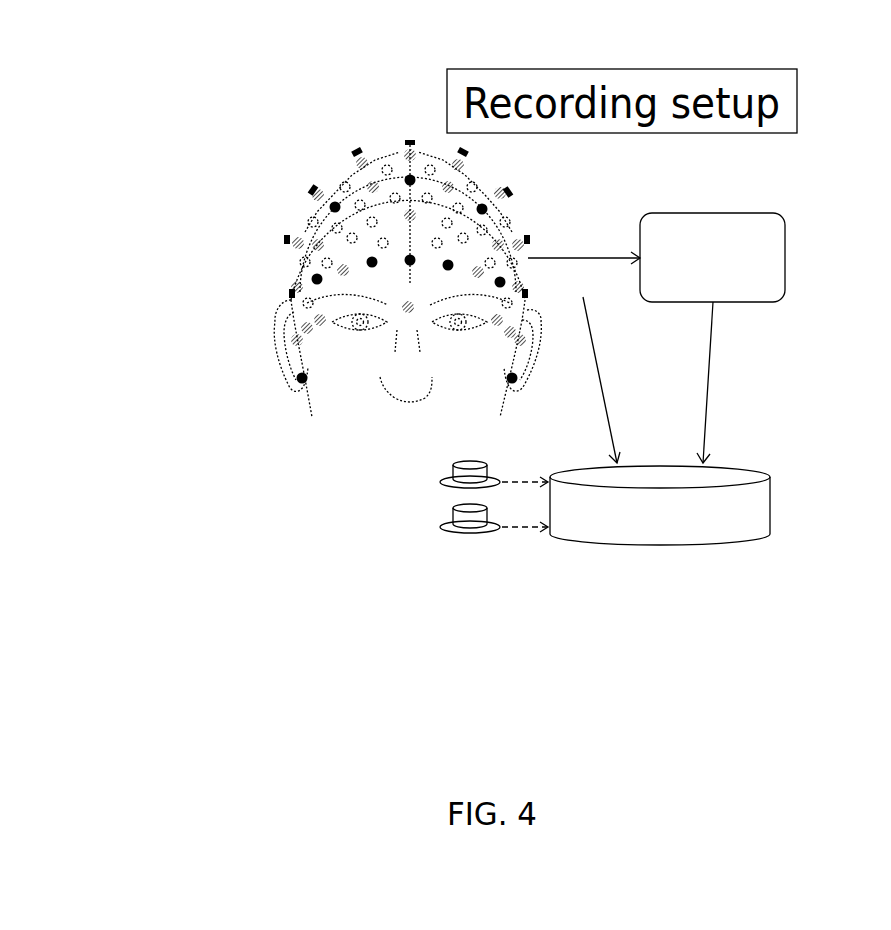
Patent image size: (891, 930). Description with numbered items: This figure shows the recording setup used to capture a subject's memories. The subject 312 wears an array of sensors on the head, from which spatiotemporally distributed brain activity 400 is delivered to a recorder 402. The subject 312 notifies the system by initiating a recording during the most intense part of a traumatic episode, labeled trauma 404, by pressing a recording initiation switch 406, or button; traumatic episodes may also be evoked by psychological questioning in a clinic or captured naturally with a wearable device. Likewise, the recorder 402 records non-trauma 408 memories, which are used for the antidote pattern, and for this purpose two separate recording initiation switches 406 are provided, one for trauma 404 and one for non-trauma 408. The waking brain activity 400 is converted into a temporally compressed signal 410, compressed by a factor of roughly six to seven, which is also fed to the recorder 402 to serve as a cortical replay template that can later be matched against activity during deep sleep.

The subject 312 is at (293, 350).
The brain activity 400 is at (563, 217).
The compressed signal 410 is at (785, 252).
The recorder 402 is at (770, 503).
The trauma 404 is at (475, 460).
The non-trauma 408 is at (495, 530).
The recording initiation switch 406 is at (442, 630).